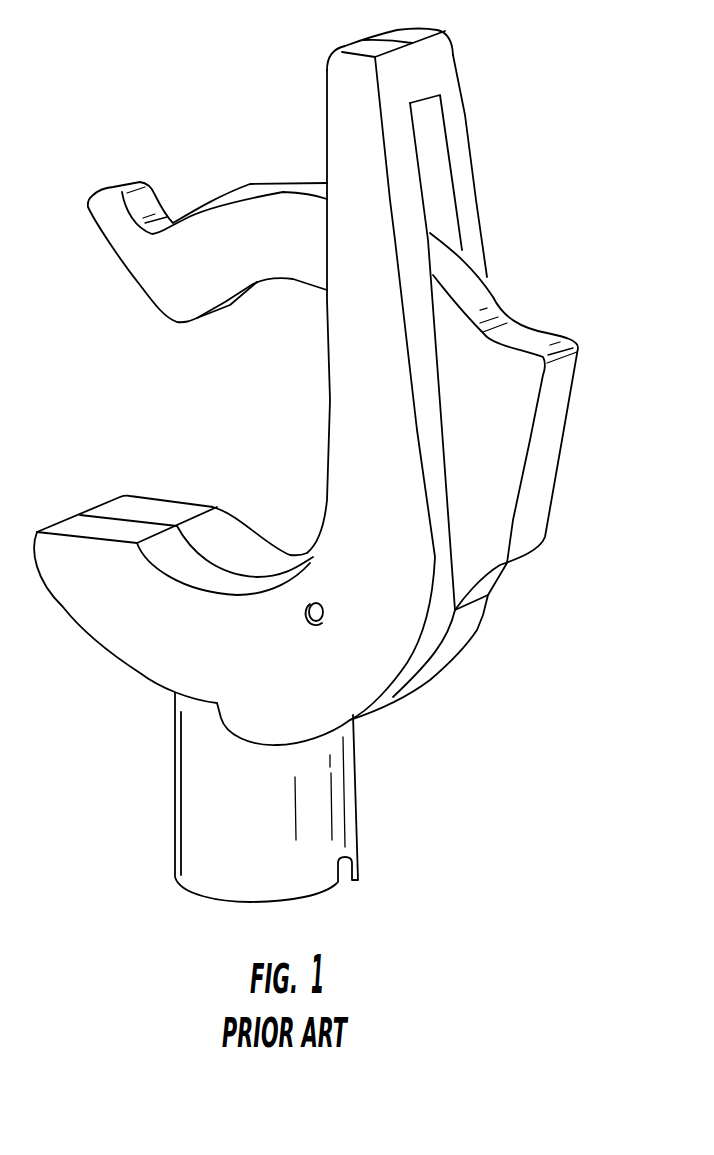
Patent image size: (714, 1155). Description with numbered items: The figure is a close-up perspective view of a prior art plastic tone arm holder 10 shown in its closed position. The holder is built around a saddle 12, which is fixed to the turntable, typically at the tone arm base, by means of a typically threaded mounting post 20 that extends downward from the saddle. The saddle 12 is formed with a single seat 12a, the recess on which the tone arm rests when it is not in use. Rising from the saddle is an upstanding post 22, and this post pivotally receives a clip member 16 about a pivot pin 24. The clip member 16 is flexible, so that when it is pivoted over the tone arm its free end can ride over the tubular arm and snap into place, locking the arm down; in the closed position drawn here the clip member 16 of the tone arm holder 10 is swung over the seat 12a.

The tone arm holder 10 is at (527, 150).
The saddle 12 is at (152, 663).
The single seat 12a is at (277, 547).
The clip member 16 is at (228, 197).
The mounting post 20 is at (350, 795).
The upstanding post 22 is at (463, 93).
The pivot pin 24 is at (326, 613).